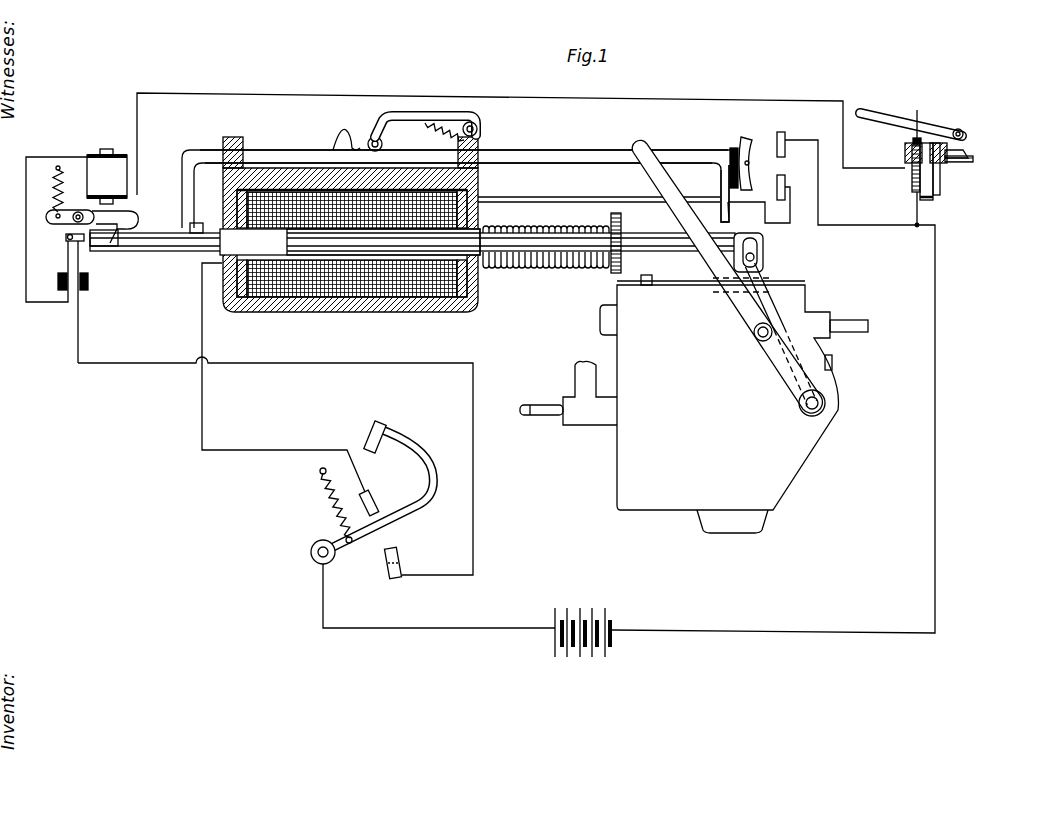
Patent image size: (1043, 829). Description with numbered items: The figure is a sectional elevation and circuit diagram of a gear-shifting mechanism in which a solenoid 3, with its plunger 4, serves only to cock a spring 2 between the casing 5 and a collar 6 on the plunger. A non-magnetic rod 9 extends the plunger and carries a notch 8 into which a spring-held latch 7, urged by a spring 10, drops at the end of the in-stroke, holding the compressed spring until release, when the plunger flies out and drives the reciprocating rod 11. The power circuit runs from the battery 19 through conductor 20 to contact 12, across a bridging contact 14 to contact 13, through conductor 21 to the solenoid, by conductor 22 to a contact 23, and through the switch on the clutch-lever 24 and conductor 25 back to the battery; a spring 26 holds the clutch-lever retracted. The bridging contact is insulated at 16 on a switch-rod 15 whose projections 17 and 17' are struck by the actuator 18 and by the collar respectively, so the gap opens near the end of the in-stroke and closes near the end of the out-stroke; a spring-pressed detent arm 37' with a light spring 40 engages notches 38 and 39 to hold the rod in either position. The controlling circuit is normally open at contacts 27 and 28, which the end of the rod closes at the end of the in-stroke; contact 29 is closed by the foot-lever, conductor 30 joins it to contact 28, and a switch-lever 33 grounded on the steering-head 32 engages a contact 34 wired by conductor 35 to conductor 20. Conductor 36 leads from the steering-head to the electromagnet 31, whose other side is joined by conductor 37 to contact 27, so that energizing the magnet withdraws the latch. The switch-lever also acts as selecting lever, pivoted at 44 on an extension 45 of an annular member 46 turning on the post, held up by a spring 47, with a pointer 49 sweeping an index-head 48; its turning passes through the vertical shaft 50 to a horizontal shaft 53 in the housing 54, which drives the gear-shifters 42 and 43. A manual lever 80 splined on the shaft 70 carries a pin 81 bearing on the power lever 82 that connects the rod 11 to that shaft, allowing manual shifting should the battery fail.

The spring 2 is at (507, 268).
The solenoid 3 is at (440, 290).
The plunger 4 is at (372, 248).
The frame or casing 5 is at (481, 189).
The collar 6 is at (623, 226).
The latch 7 is at (127, 227).
The notch 8 is at (118, 240).
The rod 9 is at (178, 251).
The spring 10 is at (56, 185).
The reciprocating member or rod 11 is at (692, 255).
The contact 12 is at (785, 140).
The contact 13 is at (785, 185).
The bridging contact 14 is at (748, 137).
The switch-rod 15 is at (555, 162).
The insulation 16 is at (733, 148).
The projection 17 is at (456, 189).
The projection 17' is at (708, 193).
The actuator or projection 18 is at (196, 234).
The source of energy 19 is at (582, 645).
The conductor 20 is at (773, 401).
The conductor 21 is at (599, 189).
The conductor 22 is at (283, 377).
The contact 23 is at (374, 506).
The clutch-lever 24 is at (422, 462).
The conductor 25 is at (439, 608).
The spring 26 is at (330, 502).
The contact 27 is at (66, 258).
The contact 28 is at (82, 250).
The contact 29 is at (402, 556).
The conductor 30 is at (275, 458).
The electromagnet 31 is at (76, 225).
The steering-head 32 is at (941, 183).
The switch-lever 33 is at (930, 120).
The contact 34 is at (916, 115).
The conductor 35 is at (915, 208).
The conductor 36 is at (521, 137).
The conductor 37 is at (34, 314).
The spring-pressed arm 37' is at (425, 116).
The notch 38 is at (338, 140).
The notch 39 is at (372, 137).
The spring 40 is at (468, 121).
The gear-shifter 42 is at (562, 427).
The gear-shifter 43 is at (522, 417).
The pivot 44 is at (968, 134).
The extension 45 is at (966, 150).
The annular member 46 is at (960, 129).
The spring 47 is at (903, 150).
The index-head and plate 48 is at (973, 162).
The pointer 49 is at (975, 158).
The vertical shaft 50 is at (934, 200).
The horizontal shaft 53 is at (862, 334).
The casing or housing 54 is at (839, 412).
The shaft 70 is at (805, 412).
The manual lever 80 is at (735, 300).
The pin 81 is at (756, 338).
The power lever 82 is at (790, 372).